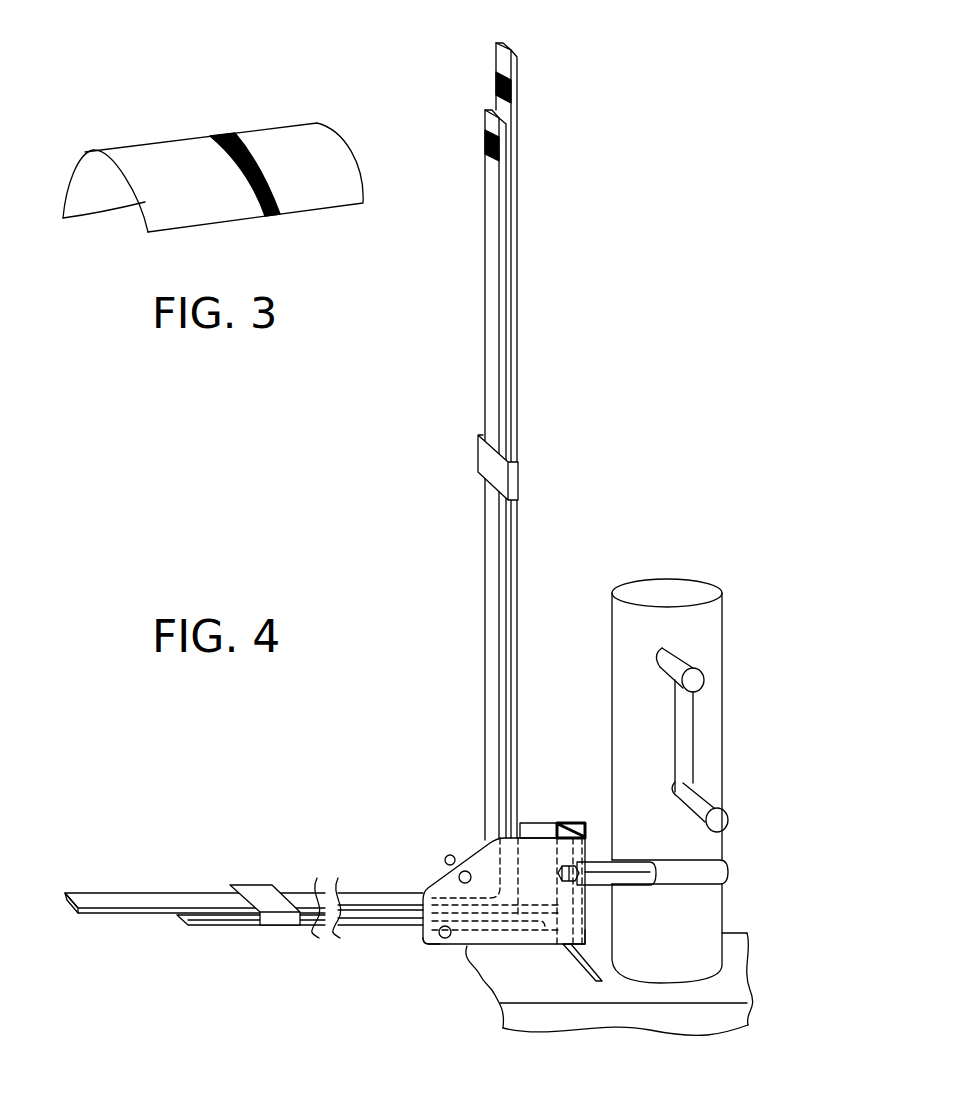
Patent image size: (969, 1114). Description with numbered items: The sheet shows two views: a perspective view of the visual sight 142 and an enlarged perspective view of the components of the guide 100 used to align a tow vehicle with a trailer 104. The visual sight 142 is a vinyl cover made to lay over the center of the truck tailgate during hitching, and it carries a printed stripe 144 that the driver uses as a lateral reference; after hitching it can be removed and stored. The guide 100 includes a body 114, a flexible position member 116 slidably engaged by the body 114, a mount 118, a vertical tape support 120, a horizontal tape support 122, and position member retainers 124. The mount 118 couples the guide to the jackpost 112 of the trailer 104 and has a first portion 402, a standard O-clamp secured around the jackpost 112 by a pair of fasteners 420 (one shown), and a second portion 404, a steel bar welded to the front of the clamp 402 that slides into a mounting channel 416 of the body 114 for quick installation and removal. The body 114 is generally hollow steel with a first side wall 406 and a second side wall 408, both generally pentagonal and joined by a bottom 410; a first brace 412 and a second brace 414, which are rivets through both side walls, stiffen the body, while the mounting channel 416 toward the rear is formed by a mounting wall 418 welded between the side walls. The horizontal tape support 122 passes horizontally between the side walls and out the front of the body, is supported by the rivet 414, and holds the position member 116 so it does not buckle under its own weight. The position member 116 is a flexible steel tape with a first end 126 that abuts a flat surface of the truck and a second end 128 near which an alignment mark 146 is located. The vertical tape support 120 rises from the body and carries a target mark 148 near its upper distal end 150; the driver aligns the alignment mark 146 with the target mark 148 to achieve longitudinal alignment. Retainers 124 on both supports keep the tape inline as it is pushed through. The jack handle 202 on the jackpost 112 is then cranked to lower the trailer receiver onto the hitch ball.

In FIG. 4, the guide 100 is at (392, 586).
In FIG. 4, the trailer 104 is at (560, 997).
In FIG. 4, the jackpost 112 is at (610, 622).
In FIG. 4, the body 114 is at (410, 883).
In FIG. 4, the flexible position member 116 is at (487, 643).
In FIG. 4, the mount 118 is at (710, 875).
In FIG. 4, the vertical tape support 120 is at (518, 283).
In FIG. 4, the horizontal tape support 122 is at (223, 922).
In FIG. 4, the position member retainer 124 is at (478, 452).
In FIG. 4, the first end 126 is at (73, 908).
In FIG. 4, the second end 128 is at (485, 115).
In FIG. 3, the visual sight 142 is at (197, 228).
In FIG. 3, the stripe 144 is at (267, 160).
In FIG. 4, the alignment mark 146 is at (485, 140).
In FIG. 4, the target mark 148 is at (496, 77).
In FIG. 4, the upper distal end 150 is at (513, 49).
In FIG. 4, the jack handle 202 is at (683, 713).
In FIG. 4, the first portion (clamp) 402 is at (687, 873).
In FIG. 4, the second portion (vertical member) 404 is at (567, 941).
In FIG. 4, the first side wall 406 is at (548, 823).
In FIG. 4, the second side wall 408 is at (465, 870).
In FIG. 4, the bottom 410 is at (412, 940).
In FIG. 4, the first brace 412 is at (448, 855).
In FIG. 4, the second brace 414 is at (445, 939).
In FIG. 4, the mounting channel 416 is at (567, 823).
In FIG. 4, the mounting wall 418 is at (576, 922).
In FIG. 4, the fastener 420 is at (585, 875).